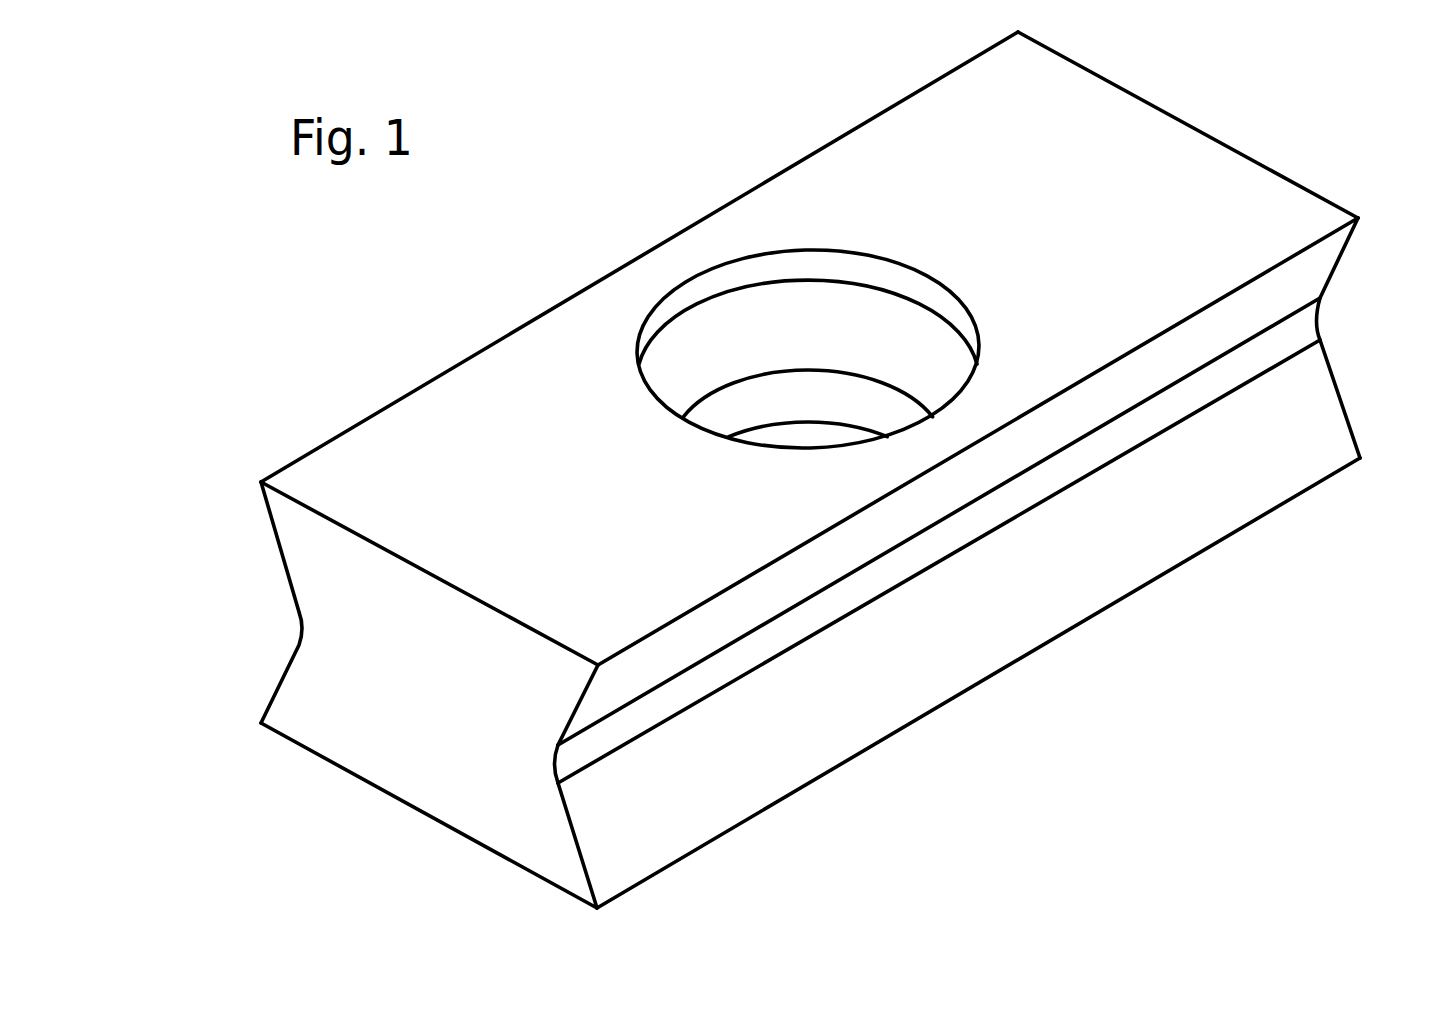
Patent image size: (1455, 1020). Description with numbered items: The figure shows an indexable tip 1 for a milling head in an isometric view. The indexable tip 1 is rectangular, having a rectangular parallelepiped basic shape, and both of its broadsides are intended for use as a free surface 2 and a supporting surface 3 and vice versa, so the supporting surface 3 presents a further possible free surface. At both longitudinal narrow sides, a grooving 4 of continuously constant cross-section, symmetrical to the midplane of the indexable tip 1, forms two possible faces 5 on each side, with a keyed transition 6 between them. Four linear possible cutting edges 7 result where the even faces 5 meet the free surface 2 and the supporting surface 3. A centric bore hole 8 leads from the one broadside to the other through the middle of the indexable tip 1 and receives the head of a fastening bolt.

The indexable tip 1 is at (1252, 98).
The free surface 2 is at (1128, 228).
The supporting surface 3 is at (1163, 578).
The grooving 4 is at (1330, 323).
The faces 5 is at (1090, 431).
The keyed transition 6 is at (840, 600).
The cutting edges 7 is at (447, 368).
The bore hole 8 is at (908, 310).